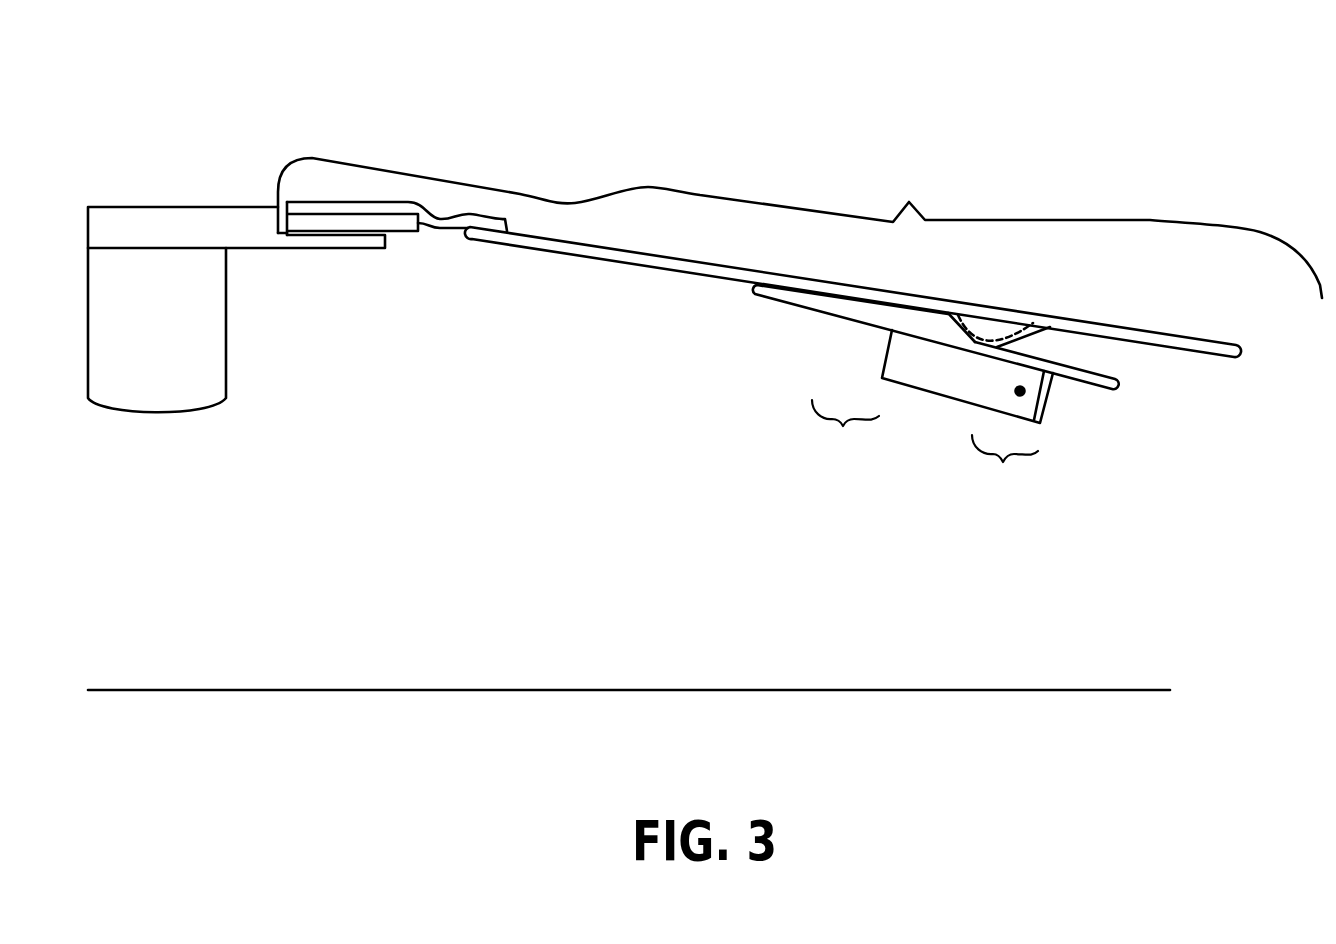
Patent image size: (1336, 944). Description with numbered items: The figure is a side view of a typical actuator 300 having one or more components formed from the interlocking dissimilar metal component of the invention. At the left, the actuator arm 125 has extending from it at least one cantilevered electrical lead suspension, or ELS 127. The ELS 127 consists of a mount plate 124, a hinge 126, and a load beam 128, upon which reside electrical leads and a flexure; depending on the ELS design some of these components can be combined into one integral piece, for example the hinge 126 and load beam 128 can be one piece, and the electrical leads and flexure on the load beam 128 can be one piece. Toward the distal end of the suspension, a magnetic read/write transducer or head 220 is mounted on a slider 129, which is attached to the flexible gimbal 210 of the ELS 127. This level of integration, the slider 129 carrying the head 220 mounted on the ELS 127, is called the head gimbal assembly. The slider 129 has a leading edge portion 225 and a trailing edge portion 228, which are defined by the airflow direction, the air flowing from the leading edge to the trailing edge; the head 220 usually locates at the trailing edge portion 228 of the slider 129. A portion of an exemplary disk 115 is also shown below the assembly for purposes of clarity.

The actuator 300 is at (814, 86).
The actuator arm 125 is at (232, 207).
The mount plate 124 is at (347, 221).
The hinge 126 is at (443, 225).
The electrical lead suspension 127 is at (800, 228).
The load beam 128 is at (600, 254).
The flexible gimbal 210 is at (1070, 367).
The head 220 is at (1040, 423).
The slider 129 is at (1024, 393).
The leading edge portion 225 is at (844, 434).
The trailing edge portion 228 is at (1005, 471).
The disk 115 is at (465, 690).